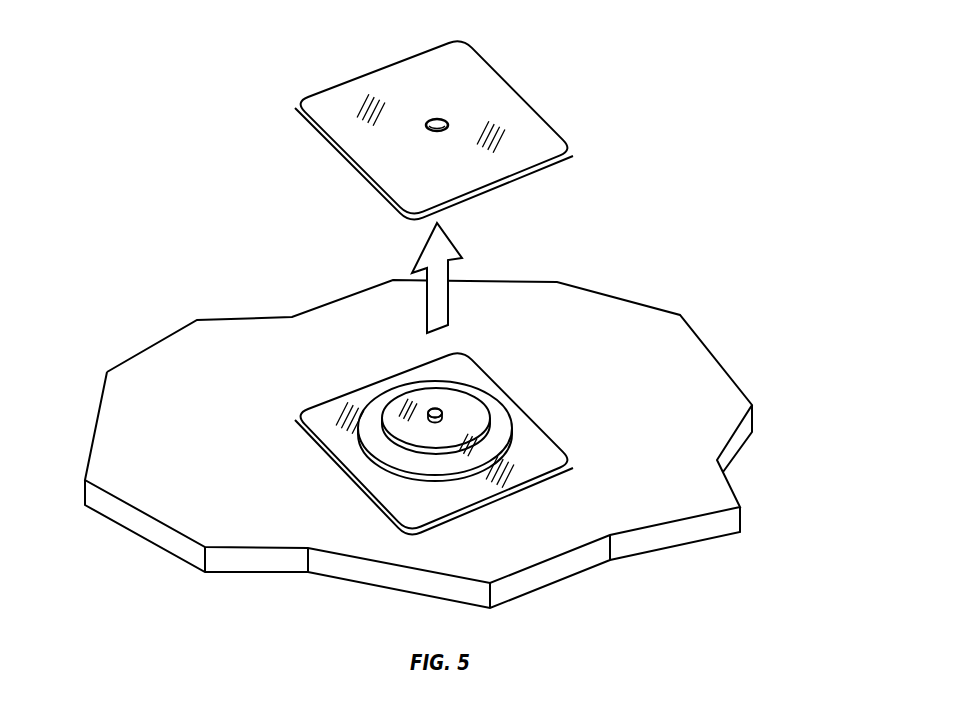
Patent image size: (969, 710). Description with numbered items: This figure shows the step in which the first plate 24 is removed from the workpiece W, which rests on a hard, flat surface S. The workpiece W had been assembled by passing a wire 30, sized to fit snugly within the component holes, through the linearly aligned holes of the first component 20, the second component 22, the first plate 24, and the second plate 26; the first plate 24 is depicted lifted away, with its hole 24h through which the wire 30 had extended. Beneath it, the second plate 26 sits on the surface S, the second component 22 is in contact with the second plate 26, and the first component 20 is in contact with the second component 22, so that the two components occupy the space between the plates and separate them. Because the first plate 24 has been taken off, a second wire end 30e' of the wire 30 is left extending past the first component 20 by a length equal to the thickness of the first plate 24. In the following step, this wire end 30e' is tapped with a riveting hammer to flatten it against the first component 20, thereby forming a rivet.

The surface S is at (200, 432).
The workpiece W is at (352, 368).
The first plate 24 is at (497, 83).
The hole 24h is at (427, 127).
The second plate 26 is at (542, 443).
The second component 22 is at (422, 468).
The first component 20 is at (478, 418).
The wire 30 is at (438, 420).
The second wire end 30e' is at (407, 379).